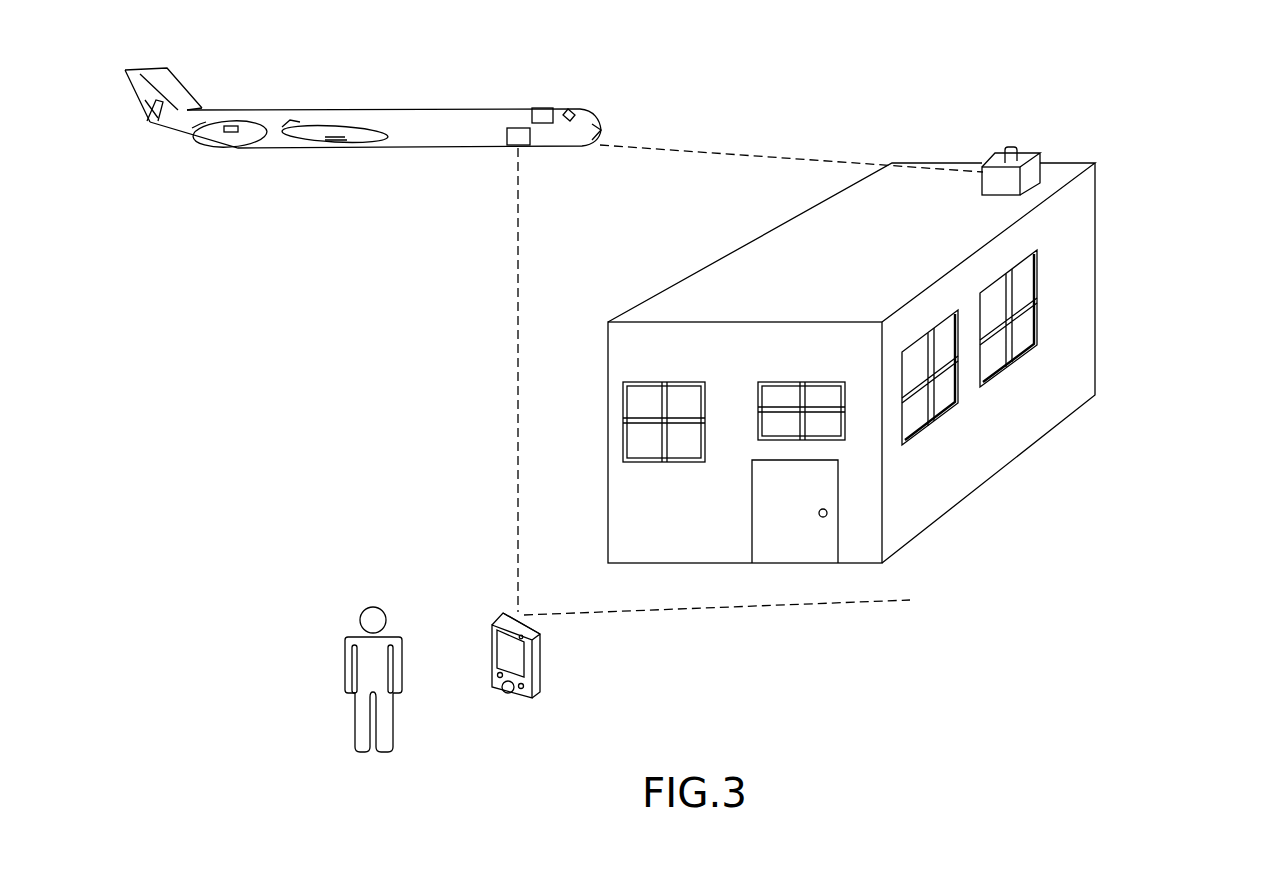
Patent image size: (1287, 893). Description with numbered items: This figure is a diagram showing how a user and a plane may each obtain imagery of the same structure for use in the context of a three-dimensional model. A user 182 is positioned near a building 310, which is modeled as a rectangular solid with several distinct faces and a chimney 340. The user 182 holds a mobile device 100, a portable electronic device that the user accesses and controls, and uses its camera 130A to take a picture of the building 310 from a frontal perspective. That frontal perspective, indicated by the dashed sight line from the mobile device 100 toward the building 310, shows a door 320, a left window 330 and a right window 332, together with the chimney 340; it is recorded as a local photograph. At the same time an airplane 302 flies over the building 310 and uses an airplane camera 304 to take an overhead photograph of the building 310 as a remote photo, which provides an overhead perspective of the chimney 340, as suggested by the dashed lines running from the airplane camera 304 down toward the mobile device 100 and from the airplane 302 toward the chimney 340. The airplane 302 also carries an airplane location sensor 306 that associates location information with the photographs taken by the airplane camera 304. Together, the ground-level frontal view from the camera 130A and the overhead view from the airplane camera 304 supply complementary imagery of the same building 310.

The airplane 302 is at (388, 107).
The airplane camera 304 is at (530, 138).
The airplane location sensor 306 is at (549, 116).
The building 310 is at (1095, 305).
The door 320 is at (750, 517).
The left window 330 is at (642, 380).
The right window 332 is at (846, 440).
The chimney 340 is at (1032, 170).
The camera 130A is at (473, 587).
The user 182 is at (345, 653).
The mobile device 100 is at (566, 638).